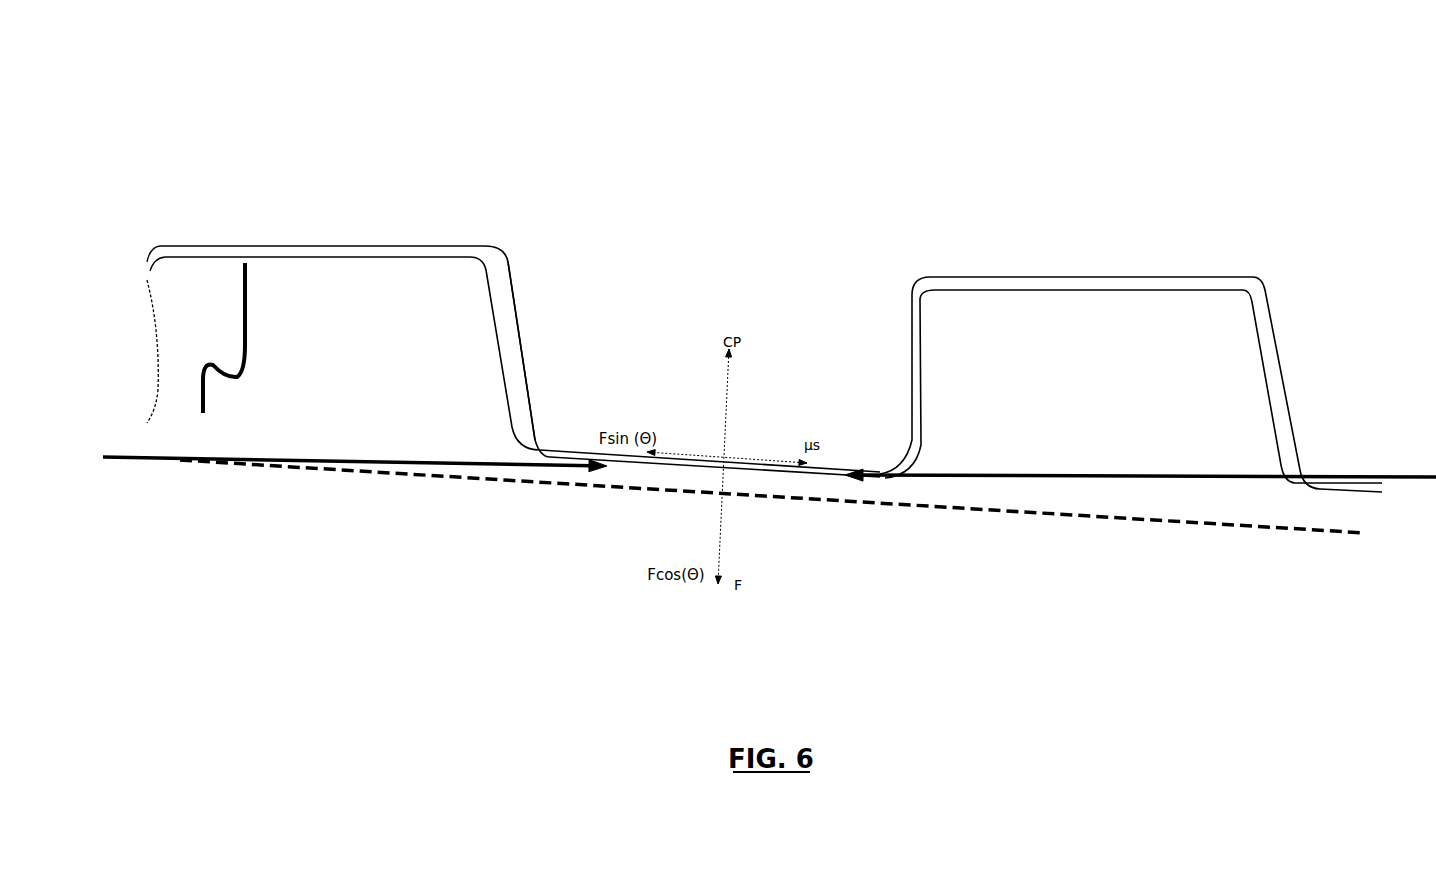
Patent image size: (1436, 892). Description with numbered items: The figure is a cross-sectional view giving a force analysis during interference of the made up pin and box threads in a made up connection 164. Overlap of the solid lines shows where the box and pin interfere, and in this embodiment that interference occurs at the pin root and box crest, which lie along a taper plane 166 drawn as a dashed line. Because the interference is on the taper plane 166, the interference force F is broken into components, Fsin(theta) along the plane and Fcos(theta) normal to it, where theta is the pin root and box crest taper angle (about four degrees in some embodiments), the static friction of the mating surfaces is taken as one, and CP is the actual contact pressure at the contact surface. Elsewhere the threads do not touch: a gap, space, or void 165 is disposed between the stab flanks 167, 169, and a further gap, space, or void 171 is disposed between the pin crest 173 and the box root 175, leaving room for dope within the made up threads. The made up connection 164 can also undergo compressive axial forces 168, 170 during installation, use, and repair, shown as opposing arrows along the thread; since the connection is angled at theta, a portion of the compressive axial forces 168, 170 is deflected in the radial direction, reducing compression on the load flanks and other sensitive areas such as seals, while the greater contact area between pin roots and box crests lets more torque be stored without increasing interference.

The made up connection 164 is at (795, 238).
The gap between stab flanks 165 is at (514, 338).
The taper plane 166 is at (772, 506).
The stab flank 167 is at (500, 370).
The compressive axial force 168 is at (1140, 384).
The stab flank 169 is at (520, 370).
The compressive axial force 170 is at (333, 458).
The gap between pin crest and box root 171 is at (345, 248).
The pin crest 173 is at (211, 352).
The box root 175 is at (185, 247).